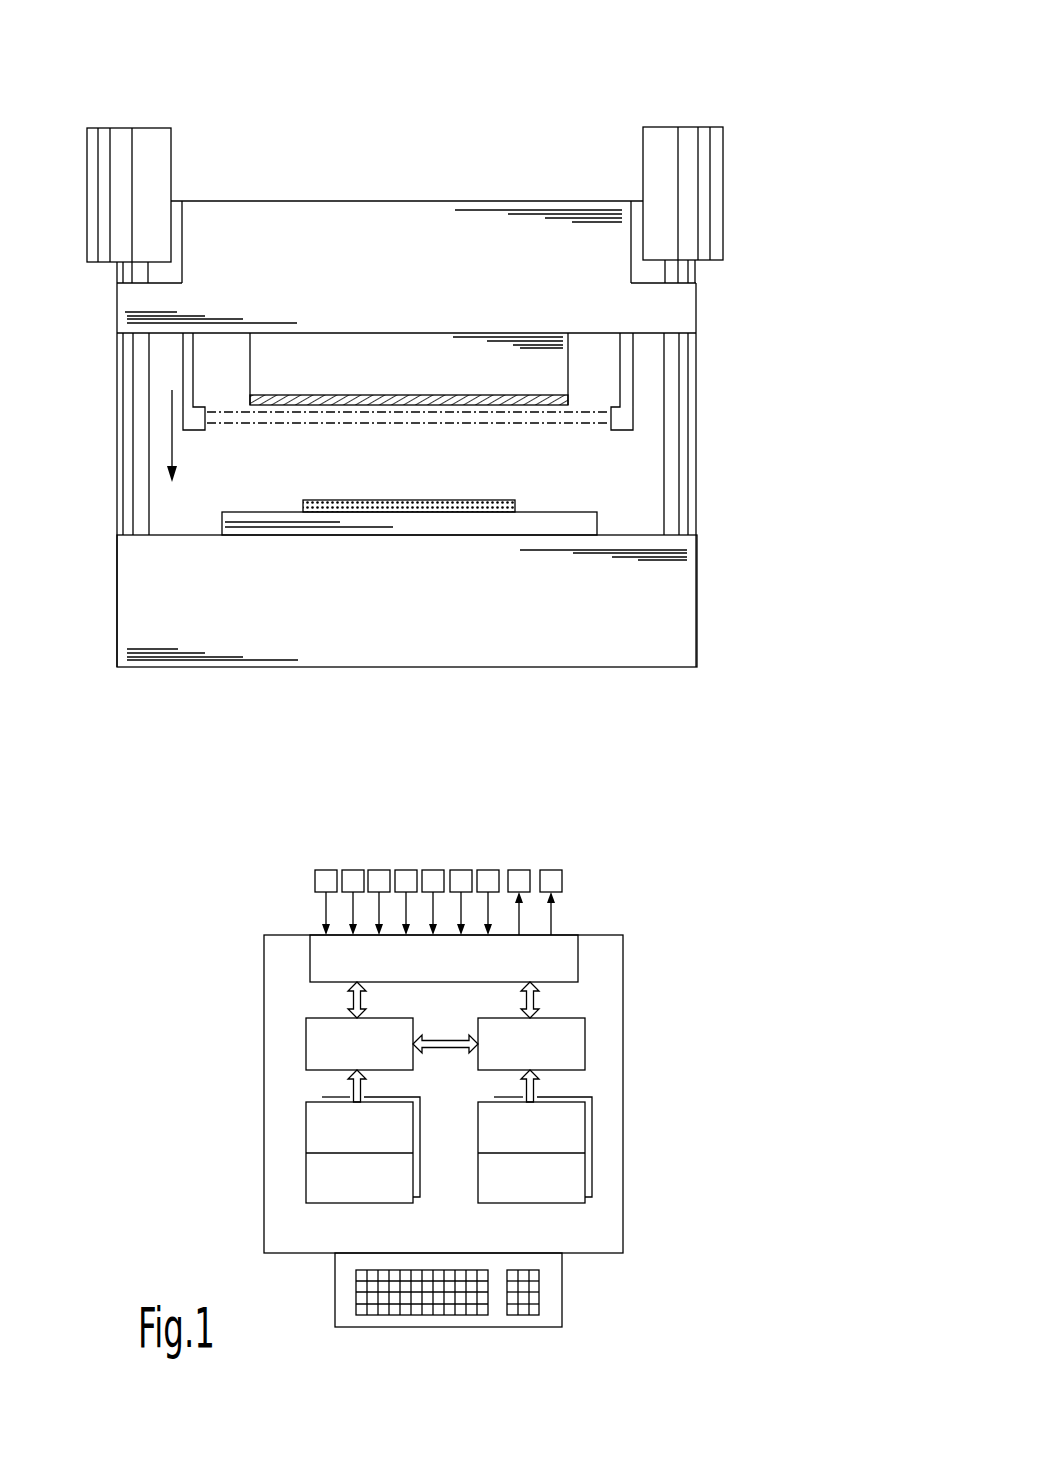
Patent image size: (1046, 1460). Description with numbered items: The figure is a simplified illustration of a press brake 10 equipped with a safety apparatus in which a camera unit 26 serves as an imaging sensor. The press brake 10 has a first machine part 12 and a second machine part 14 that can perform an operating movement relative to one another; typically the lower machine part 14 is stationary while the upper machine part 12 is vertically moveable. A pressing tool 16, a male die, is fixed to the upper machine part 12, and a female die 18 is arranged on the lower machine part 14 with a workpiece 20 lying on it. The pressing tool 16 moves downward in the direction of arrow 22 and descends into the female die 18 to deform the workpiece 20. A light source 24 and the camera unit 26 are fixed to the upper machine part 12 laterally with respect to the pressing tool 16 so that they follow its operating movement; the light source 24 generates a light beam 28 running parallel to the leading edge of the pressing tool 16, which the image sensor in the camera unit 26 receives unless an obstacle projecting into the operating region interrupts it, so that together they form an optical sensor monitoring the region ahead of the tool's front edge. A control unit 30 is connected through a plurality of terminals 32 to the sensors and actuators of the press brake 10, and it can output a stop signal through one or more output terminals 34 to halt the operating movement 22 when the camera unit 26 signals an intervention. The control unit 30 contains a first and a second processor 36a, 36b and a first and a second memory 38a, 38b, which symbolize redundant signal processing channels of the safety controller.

The press brake 10 is at (470, 150).
The first machine part 12 is at (290, 228).
The second machine part 14 is at (543, 622).
The pressing tool 16 is at (383, 370).
The female die 18 is at (447, 518).
The workpiece 20 is at (367, 503).
The arrow 22 is at (173, 443).
The light source 24 is at (192, 418).
The camera unit 26 is at (622, 418).
The light beam 28 is at (263, 415).
The control unit 30 is at (625, 1207).
The terminals 32 is at (585, 863).
The output terminals 34 is at (562, 882).
The first processor 36a is at (303, 1047).
The second processor 36b is at (587, 1035).
The first memory 38a is at (305, 1152).
The second memory 38b is at (590, 1137).